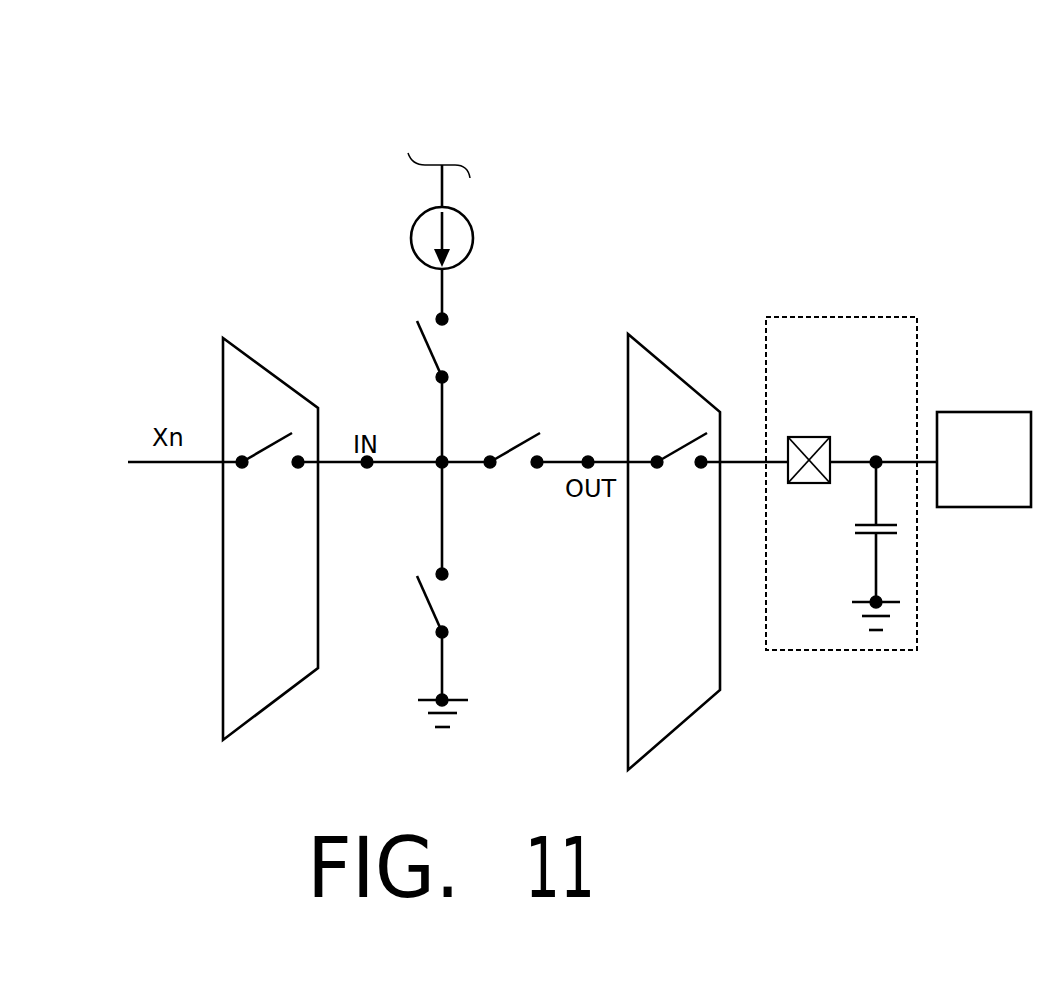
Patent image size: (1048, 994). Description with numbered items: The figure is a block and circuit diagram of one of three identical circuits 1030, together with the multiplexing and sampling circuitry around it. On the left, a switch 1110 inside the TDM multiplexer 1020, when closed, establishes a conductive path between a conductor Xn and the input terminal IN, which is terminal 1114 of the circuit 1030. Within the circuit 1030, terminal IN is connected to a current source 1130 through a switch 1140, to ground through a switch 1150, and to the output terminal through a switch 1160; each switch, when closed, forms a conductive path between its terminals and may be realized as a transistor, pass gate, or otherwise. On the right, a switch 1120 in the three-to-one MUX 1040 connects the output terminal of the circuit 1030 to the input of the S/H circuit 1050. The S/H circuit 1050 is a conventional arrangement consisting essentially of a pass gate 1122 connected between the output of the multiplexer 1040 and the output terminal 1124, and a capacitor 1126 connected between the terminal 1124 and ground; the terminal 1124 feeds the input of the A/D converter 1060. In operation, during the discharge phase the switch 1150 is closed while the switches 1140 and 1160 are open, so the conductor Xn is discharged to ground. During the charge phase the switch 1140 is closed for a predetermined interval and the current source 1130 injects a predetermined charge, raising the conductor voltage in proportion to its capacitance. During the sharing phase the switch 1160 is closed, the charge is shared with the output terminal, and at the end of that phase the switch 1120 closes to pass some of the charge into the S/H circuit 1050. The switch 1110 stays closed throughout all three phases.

The TDM multiplexer 1020 is at (297, 670).
The circuit 1030 is at (597, 148).
The 3:1 MUX 1040 is at (714, 688).
The S/H circuit 1050 is at (875, 317).
The A/D converter 1060 is at (990, 412).
The switch 1110 is at (262, 464).
The input terminal 1114 is at (365, 466).
The switch 1120 is at (683, 465).
The pass gate 1122 is at (805, 437).
The output terminal 1124 is at (875, 448).
The capacitor 1126 is at (850, 530).
The current source 1130 is at (472, 240).
The switch 1140 is at (443, 345).
The switch 1150 is at (445, 602).
The switch 1160 is at (511, 465).